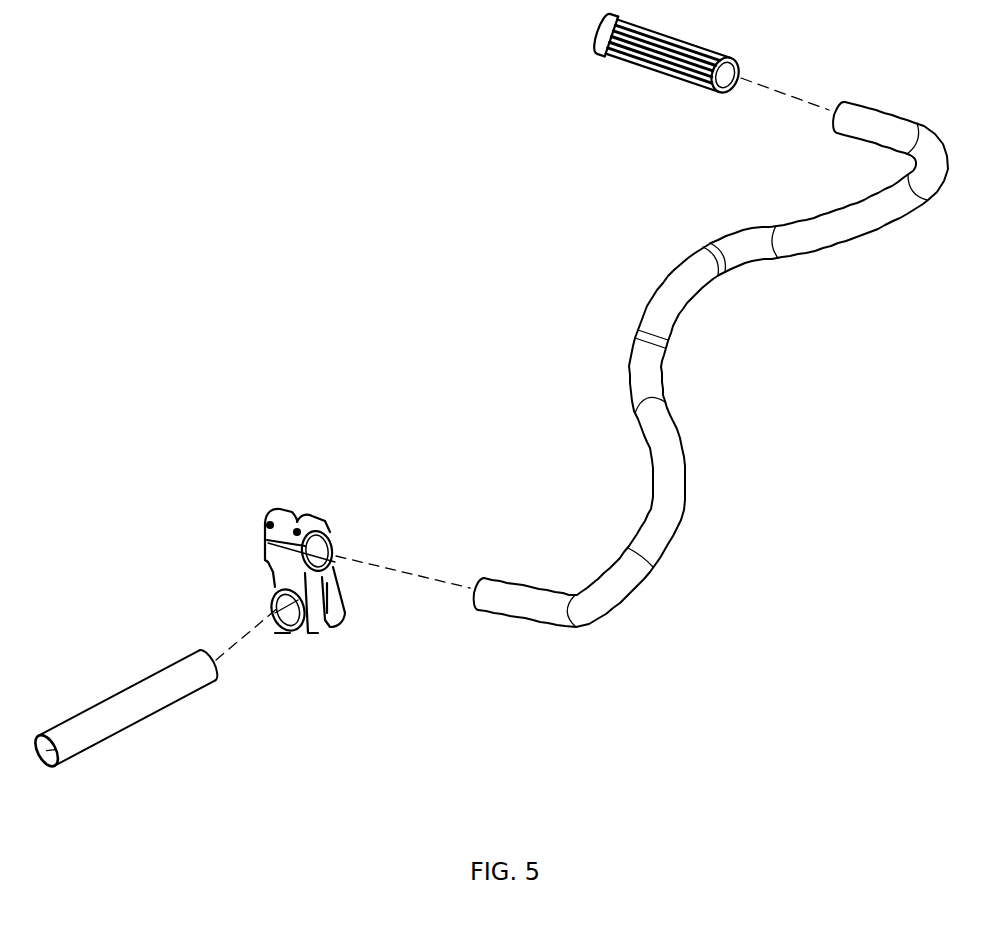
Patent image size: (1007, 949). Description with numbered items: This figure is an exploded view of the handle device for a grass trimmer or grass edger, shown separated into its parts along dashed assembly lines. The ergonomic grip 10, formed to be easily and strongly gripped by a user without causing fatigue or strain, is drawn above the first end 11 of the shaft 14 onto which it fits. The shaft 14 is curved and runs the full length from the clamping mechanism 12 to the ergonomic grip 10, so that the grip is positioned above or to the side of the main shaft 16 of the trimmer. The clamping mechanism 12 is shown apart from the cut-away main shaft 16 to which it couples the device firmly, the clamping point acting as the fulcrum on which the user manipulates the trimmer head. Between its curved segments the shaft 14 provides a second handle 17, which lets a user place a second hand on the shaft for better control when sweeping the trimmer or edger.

The ergonomic grip 10 is at (654, 76).
The first end of handlebar 11 is at (880, 90).
The clamping mechanism 12 is at (307, 653).
The shaft 14 is at (808, 268).
The main shaft 16 is at (127, 740).
The second handle 17 is at (513, 626).